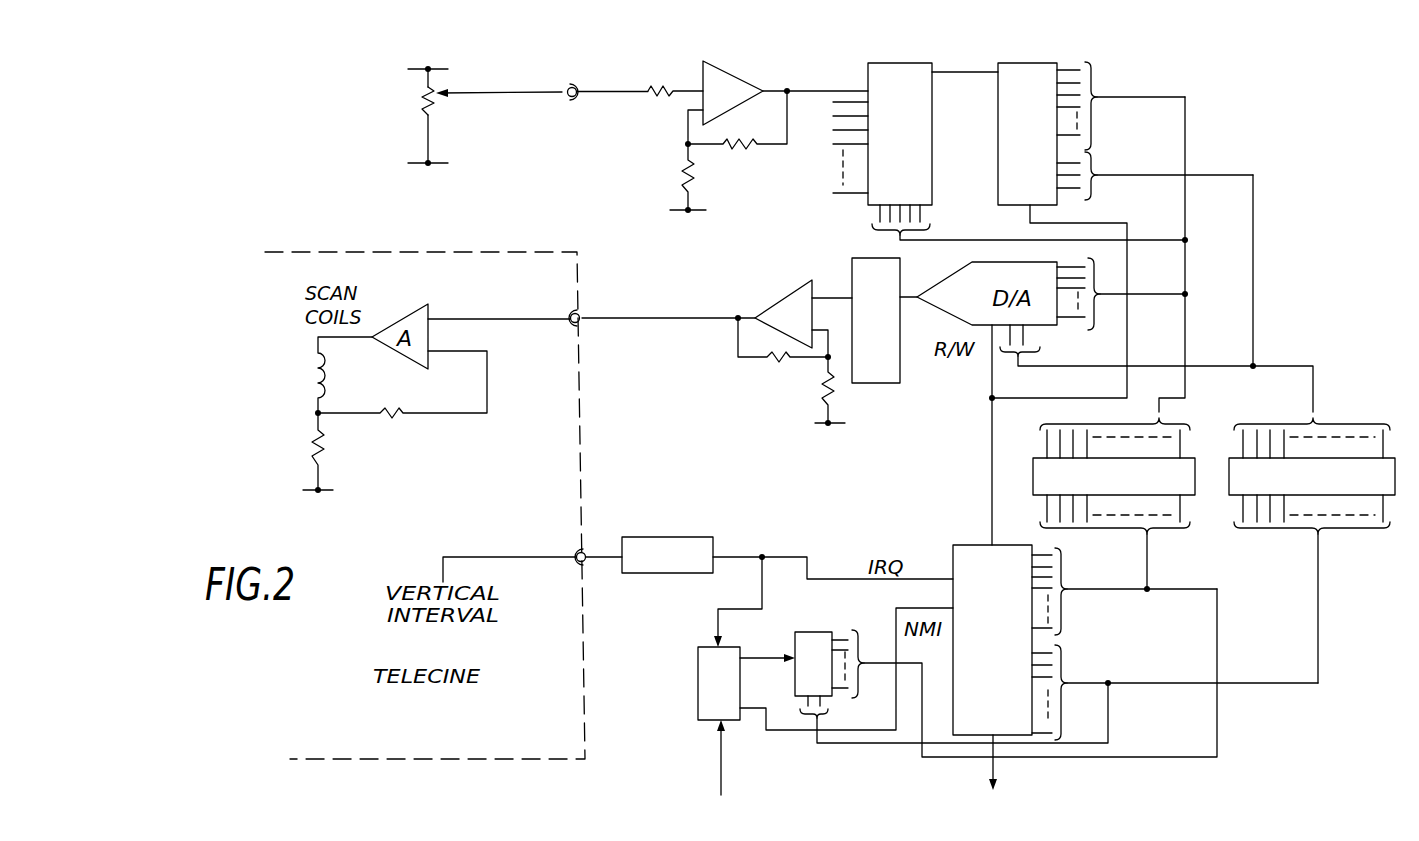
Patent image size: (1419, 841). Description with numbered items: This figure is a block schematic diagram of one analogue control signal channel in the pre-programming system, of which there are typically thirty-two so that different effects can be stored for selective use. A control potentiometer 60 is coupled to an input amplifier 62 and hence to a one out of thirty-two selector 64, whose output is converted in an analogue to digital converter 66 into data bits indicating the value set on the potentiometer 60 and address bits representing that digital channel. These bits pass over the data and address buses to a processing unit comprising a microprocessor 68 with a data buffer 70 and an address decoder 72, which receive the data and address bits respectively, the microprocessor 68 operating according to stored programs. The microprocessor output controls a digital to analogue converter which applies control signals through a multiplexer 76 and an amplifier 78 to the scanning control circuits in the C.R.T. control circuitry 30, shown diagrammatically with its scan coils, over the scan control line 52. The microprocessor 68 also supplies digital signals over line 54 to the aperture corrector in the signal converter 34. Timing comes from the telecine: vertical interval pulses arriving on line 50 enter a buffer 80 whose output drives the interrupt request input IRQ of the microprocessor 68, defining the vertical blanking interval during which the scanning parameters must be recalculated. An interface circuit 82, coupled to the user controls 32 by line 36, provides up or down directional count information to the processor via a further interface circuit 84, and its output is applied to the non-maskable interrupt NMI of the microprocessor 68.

The C.R.T. control circuitry 30 is at (400, 432).
The user controls 32 is at (780, 791).
The signal converter 34 is at (1033, 791).
The line 36 is at (725, 757).
The line 50 is at (600, 560).
The line 52 is at (677, 310).
The line 54 is at (990, 768).
The control potentiometer 60 is at (437, 108).
The input amplifier 62 is at (732, 76).
The 1 out of 32 selector 64 is at (866, 80).
The analogue to digital converter 66 is at (998, 100).
The microprocessor 68 is at (968, 545).
The data buffer 70 is at (1033, 470).
The address decoder 72 is at (1380, 455).
The multiplexer 76 is at (869, 258).
The amplifier 78 is at (794, 293).
The buffer 80 is at (671, 528).
The interface circuit 82 is at (707, 647).
The interface circuit 84 is at (810, 632).